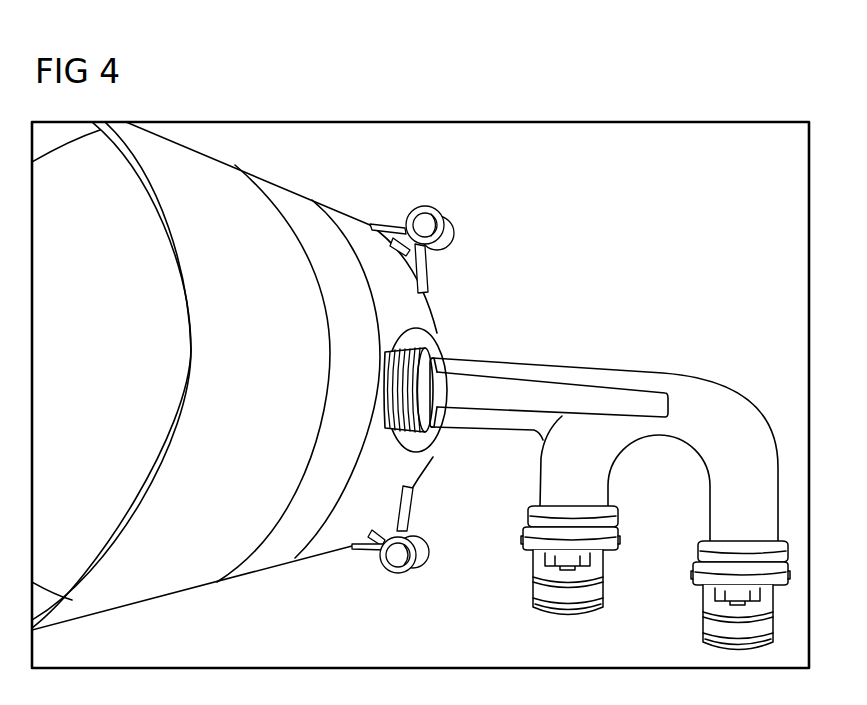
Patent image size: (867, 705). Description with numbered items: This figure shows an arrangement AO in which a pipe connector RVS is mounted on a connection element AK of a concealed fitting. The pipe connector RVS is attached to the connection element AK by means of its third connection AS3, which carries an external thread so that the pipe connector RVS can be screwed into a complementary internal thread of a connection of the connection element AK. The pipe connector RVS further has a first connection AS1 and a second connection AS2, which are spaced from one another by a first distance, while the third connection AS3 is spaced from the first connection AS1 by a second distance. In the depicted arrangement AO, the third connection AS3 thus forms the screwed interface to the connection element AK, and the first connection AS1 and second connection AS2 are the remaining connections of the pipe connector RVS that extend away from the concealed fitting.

The arrangement AO is at (690, 222).
The connection element AK is at (352, 198).
The pipe connector RVS is at (710, 354).
The first connection AS1 is at (524, 620).
The second connection AS2 is at (682, 627).
The third connection AS3 is at (442, 334).